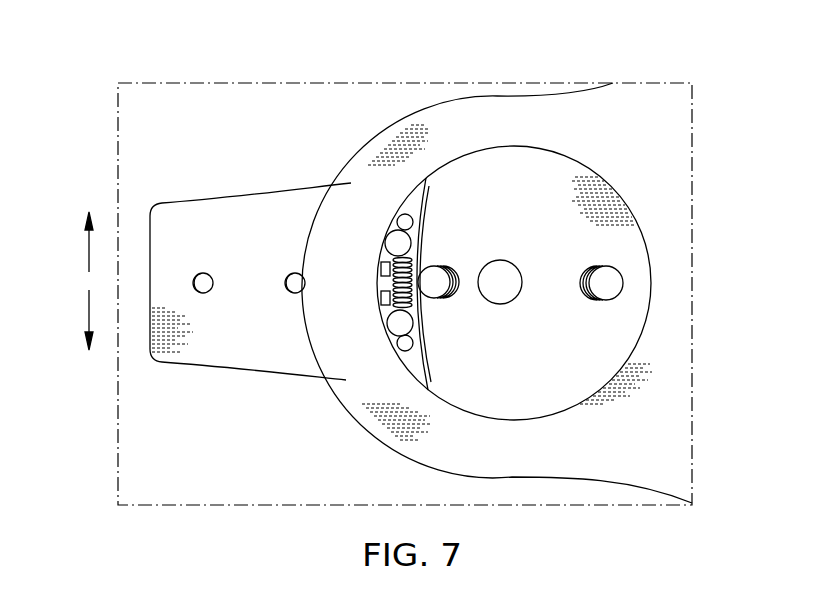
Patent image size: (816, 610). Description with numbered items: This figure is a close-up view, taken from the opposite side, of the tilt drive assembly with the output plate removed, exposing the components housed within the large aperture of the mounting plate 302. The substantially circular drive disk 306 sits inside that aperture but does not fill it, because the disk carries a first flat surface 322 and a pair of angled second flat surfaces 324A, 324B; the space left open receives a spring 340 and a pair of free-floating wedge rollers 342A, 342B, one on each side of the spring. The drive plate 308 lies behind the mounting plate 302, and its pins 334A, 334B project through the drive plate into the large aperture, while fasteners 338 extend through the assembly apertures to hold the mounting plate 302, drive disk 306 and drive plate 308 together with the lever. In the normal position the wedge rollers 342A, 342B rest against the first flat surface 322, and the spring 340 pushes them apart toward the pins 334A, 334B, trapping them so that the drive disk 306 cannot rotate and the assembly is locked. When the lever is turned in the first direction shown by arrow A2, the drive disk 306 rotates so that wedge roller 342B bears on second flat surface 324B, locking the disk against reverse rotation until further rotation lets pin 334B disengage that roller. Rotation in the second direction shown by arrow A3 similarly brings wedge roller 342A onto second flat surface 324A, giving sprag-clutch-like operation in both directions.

The mounting plate 302 is at (497, 110).
The drive disk 306 is at (523, 167).
The drive plate 308 is at (183, 220).
The first flat surface 322 is at (420, 268).
The second flat surface 324A is at (428, 183).
The second flat surface 324B is at (429, 392).
The pin 334A is at (403, 215).
The pin 334B is at (403, 350).
The fasteners 338 is at (603, 305).
The spring 340 is at (388, 272).
The wedge roller 342A is at (386, 242).
The wedge roller 342B is at (395, 333).
The arrow A2 is at (84, 251).
The arrow A3 is at (84, 319).